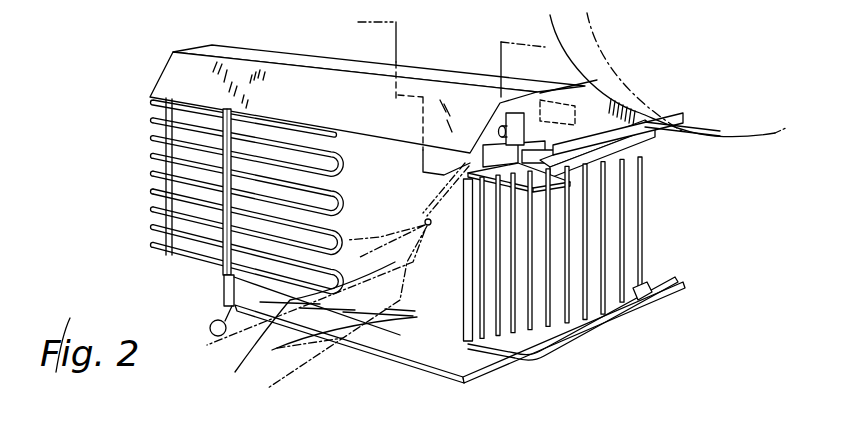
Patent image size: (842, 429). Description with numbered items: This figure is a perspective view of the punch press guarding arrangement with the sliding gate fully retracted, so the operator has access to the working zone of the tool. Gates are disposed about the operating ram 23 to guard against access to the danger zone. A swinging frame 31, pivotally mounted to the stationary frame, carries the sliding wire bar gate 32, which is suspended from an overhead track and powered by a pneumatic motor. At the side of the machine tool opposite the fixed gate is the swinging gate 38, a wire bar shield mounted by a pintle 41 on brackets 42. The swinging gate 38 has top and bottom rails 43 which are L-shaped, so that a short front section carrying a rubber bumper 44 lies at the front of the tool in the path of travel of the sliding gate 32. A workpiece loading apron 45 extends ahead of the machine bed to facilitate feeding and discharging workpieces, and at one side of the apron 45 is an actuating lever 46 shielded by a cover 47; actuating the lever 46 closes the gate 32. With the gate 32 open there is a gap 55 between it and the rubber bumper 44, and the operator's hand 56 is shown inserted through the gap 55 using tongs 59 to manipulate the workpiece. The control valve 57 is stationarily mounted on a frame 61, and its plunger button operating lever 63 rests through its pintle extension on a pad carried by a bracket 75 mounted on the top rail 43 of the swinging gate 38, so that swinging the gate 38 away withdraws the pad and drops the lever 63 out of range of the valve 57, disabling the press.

The swinging frame 31 is at (249, 73).
The ram 23 is at (407, 43).
The gap 55 is at (373, 185).
The sliding wire bar gate 32 is at (237, 195).
The cover 47 is at (227, 282).
The actuating lever 46 is at (212, 322).
The workpiece loading apron 45 is at (497, 363).
The rubber bumper 44 is at (470, 305).
The plunger button operating lever 63 is at (507, 108).
The bracket 75 is at (553, 138).
The pintle 41 is at (646, 226).
The top and bottom rails 43 is at (563, 337).
The swinging gate 38 is at (573, 308).
The brackets 42 is at (650, 137).
The control valve 57 is at (612, 60).
The frame 61 is at (632, 86).
The tongs 59 is at (431, 228).
The operator's hand 56 is at (298, 354).